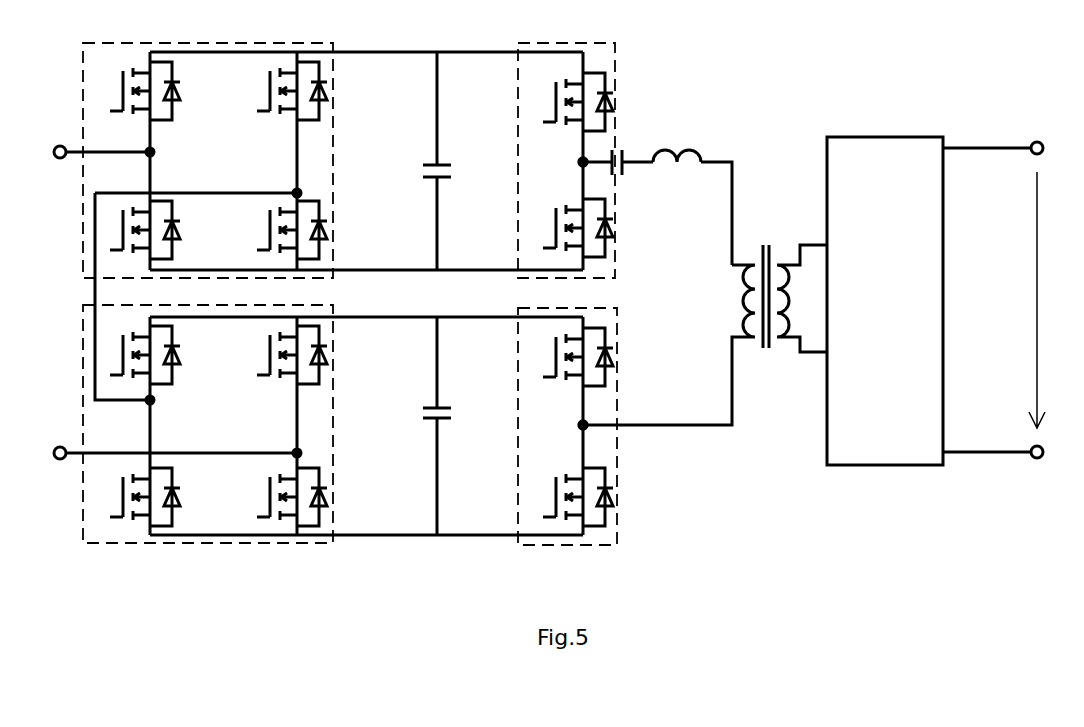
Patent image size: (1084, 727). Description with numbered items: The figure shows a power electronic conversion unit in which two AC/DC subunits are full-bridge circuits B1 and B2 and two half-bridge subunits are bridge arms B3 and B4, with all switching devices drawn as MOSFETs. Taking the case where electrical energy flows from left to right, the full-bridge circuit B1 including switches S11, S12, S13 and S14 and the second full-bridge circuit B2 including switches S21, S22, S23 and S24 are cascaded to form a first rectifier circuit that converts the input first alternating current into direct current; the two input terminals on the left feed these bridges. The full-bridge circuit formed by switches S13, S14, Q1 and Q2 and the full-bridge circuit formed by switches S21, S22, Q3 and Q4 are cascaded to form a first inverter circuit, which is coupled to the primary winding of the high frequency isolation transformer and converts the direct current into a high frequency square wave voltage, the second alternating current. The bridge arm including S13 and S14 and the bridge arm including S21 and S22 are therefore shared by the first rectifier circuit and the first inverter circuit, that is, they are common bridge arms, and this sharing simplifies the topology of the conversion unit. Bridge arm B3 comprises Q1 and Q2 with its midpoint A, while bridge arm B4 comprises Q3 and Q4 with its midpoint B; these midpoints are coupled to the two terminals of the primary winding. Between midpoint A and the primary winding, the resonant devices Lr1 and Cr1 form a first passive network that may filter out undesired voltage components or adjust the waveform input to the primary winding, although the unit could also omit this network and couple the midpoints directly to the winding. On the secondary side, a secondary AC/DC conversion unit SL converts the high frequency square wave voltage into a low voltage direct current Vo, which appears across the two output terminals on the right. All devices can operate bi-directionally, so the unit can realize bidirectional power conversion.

The switch S11 is at (132, 91).
The switch S12 is at (161, 230).
The switch S13 is at (278, 91).
The switch S14 is at (279, 230).
The switch S21 is at (153, 369).
The switch S22 is at (132, 497).
The switch S23 is at (290, 369).
The switch S24 is at (279, 497).
The switch Q1 is at (567, 102).
The switch Q2 is at (567, 228).
The switch Q3 is at (567, 357).
The switch Q4 is at (567, 497).
The full-bridge circuit B1 is at (333, 160).
The second full-bridge circuit B2 is at (333, 425).
The bridge arm B3 is at (619, 130).
The bridge arm B4 is at (618, 427).
The midpoint of bridge arm A is at (572, 163).
The midpoint of bridge arm B is at (570, 427).
The resonant device Cr1 is at (618, 175).
The resonant device Lr1 is at (692, 207).
The secondary AC/DC conversion unit SL is at (885, 137).
The low voltage direct current Vo is at (1048, 300).